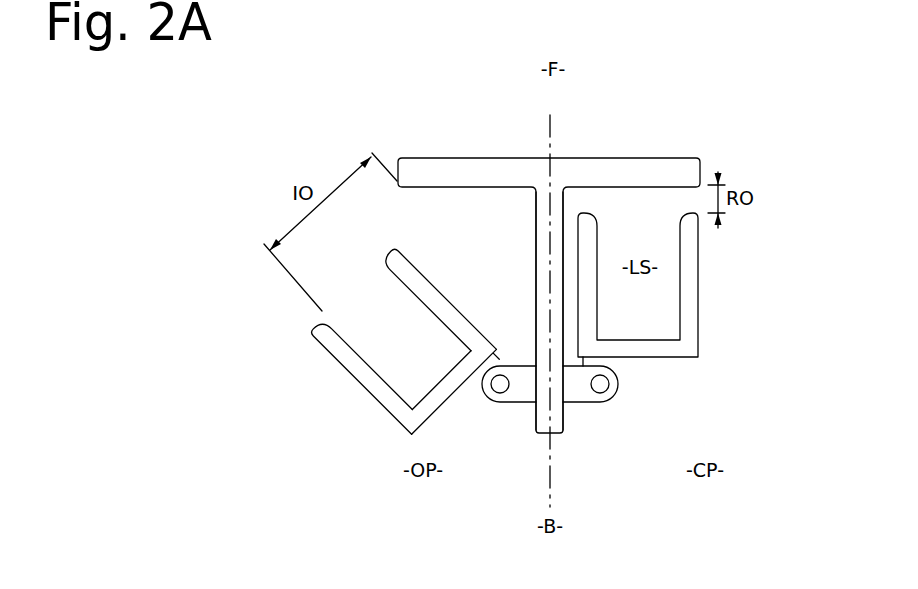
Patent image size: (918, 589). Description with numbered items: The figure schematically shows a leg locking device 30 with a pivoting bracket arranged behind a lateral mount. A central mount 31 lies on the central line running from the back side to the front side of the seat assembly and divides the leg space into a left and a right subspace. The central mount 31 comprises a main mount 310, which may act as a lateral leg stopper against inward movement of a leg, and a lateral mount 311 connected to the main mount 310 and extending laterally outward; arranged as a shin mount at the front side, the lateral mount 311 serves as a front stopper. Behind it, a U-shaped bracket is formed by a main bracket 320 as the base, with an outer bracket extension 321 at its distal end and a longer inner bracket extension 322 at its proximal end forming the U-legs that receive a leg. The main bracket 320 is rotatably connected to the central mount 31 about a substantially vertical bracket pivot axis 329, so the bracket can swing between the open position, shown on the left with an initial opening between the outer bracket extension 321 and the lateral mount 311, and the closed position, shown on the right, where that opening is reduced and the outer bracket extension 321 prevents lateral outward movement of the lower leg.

The leg locking device 30 is at (514, 281).
The central mount 31 is at (568, 135).
The main mount 310 is at (536, 257).
The lateral mount 311 is at (478, 175).
The main bracket 320 is at (514, 337).
The outer bracket extension 321 is at (352, 365).
The inner bracket extension 322 is at (410, 278).
The bracket pivot axis 329 is at (508, 391).